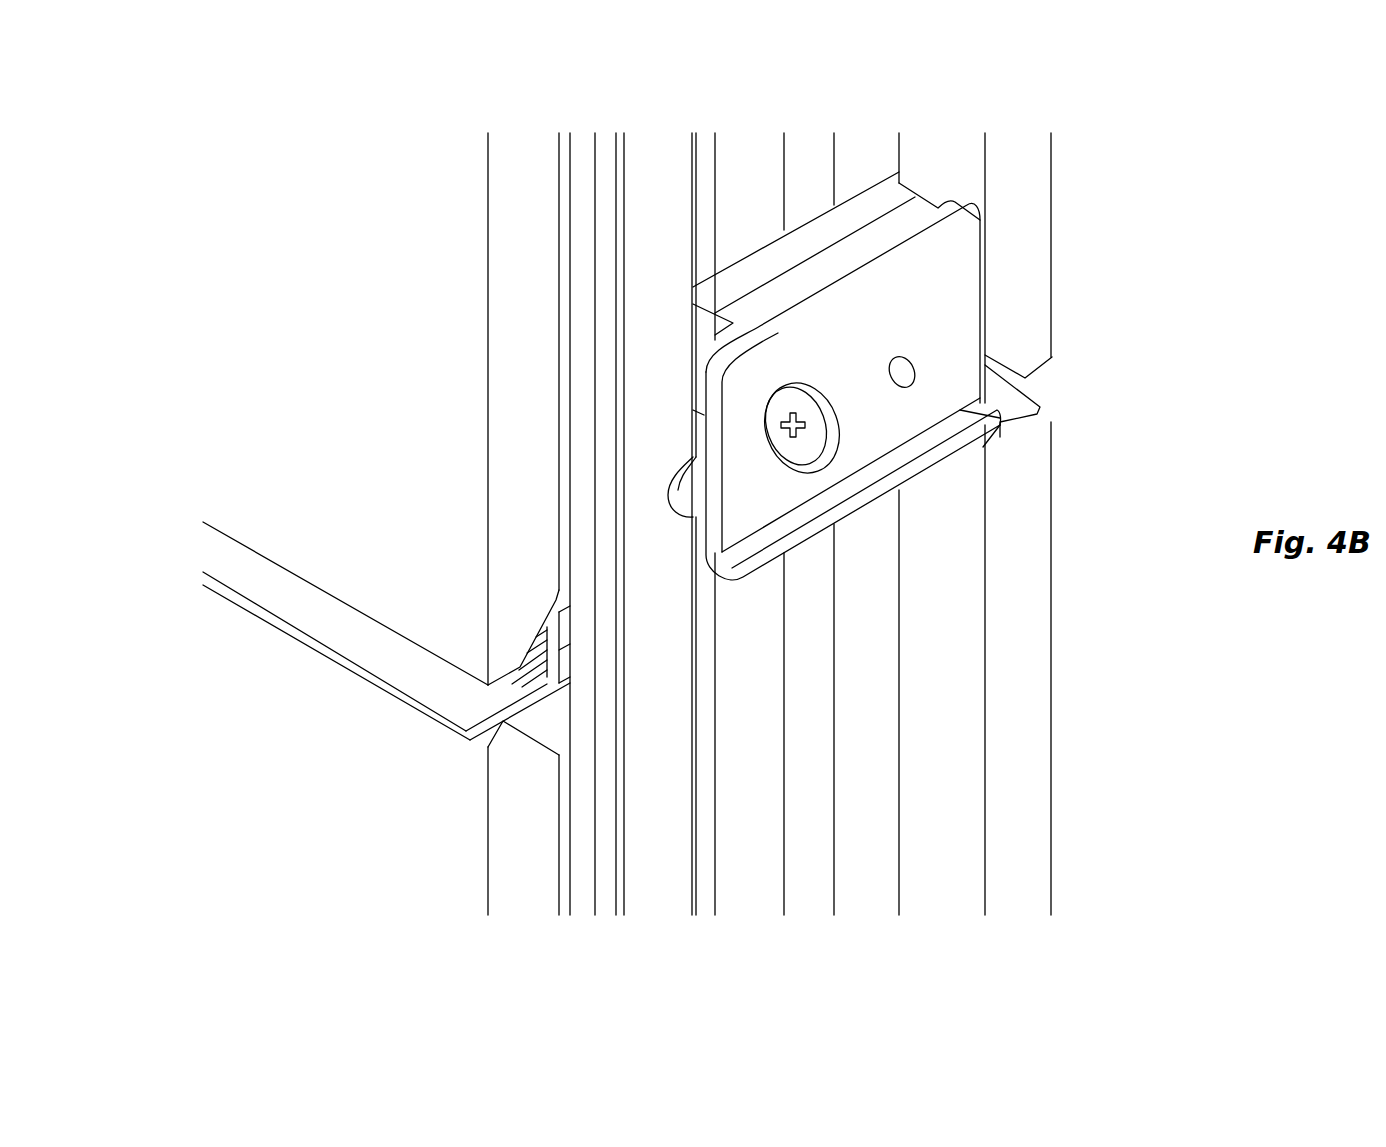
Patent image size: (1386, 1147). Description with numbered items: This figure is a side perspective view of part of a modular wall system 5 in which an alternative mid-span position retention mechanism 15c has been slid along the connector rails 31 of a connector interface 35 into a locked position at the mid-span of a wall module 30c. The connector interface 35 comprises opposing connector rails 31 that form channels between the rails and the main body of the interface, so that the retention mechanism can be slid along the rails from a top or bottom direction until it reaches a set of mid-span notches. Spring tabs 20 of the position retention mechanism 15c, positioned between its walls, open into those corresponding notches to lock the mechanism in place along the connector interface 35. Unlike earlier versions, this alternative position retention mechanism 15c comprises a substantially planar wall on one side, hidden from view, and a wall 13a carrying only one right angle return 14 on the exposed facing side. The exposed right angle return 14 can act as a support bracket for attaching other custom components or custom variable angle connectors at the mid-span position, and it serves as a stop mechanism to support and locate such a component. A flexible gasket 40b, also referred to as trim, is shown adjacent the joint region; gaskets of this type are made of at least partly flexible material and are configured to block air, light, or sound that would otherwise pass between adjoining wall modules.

The system 5 is at (683, 532).
The connector rails 31 is at (925, 845).
The connector interface 35 is at (763, 126).
The wall module 30c is at (208, 449).
The alternative mid-span position retention mechanism 15c is at (897, 390).
The spring tabs 20 is at (688, 492).
The right angle return 14 is at (927, 447).
The gasket 40b is at (1013, 398).
The wall 13a is at (942, 400).